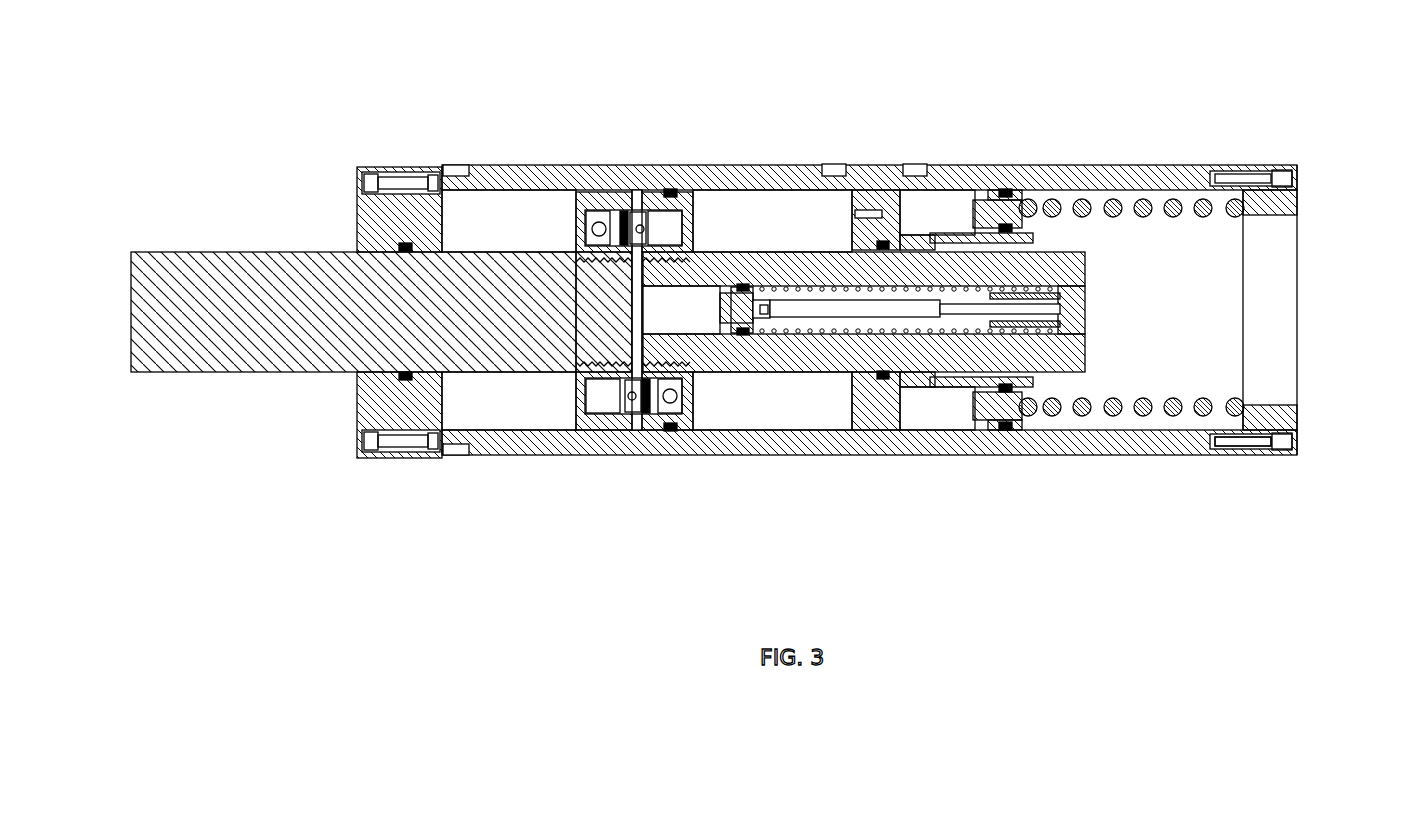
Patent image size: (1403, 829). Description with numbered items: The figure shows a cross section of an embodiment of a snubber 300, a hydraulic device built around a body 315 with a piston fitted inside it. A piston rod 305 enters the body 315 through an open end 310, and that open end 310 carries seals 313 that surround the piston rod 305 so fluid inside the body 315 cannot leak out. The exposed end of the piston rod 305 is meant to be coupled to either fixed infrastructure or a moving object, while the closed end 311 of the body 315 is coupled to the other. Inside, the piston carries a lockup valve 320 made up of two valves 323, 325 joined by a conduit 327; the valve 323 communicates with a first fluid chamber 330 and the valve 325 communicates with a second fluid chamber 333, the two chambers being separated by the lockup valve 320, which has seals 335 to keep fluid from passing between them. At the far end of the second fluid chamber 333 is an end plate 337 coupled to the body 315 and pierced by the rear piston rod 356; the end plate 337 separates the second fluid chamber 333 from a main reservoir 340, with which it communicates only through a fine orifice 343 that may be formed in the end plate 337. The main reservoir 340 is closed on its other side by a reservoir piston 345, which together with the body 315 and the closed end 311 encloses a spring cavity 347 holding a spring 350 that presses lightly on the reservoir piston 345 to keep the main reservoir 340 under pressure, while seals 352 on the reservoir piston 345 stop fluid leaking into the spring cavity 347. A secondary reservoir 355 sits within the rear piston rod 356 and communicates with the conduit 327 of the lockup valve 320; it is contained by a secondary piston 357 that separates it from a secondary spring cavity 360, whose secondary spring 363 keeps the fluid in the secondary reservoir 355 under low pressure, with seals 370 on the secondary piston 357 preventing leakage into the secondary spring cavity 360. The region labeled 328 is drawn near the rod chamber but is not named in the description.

The snubber 300 is at (303, 170).
The piston rod 305 is at (160, 250).
The open end 310 is at (357, 406).
The closed end 311 is at (1285, 272).
The seals 313 is at (399, 247).
The body 315 is at (468, 458).
The lockup valve 320 is at (608, 394).
The valve 323 is at (587, 234).
The valve 325 is at (613, 390).
The conduit 327 is at (637, 300).
The rod chamber 328 is at (484, 251).
The first fluid chamber 330 is at (537, 408).
The second fluid chamber 333 is at (752, 414).
The seals 335 is at (670, 190).
The end plate 337 is at (866, 226).
The main reservoir 340 is at (936, 273).
The fine orifice 343 is at (873, 200).
The reservoir piston 345 is at (997, 213).
The spring cavity 347 is at (1162, 275).
The spring 350 is at (1226, 446).
The seals 352 is at (1012, 426).
The secondary reservoir 355 is at (864, 202).
The rear piston rod 356 is at (1085, 360).
The secondary piston 357 is at (763, 251).
The secondary spring cavity 360 is at (1010, 393).
The secondary spring 363 is at (1030, 287).
The seals 370 is at (750, 334).